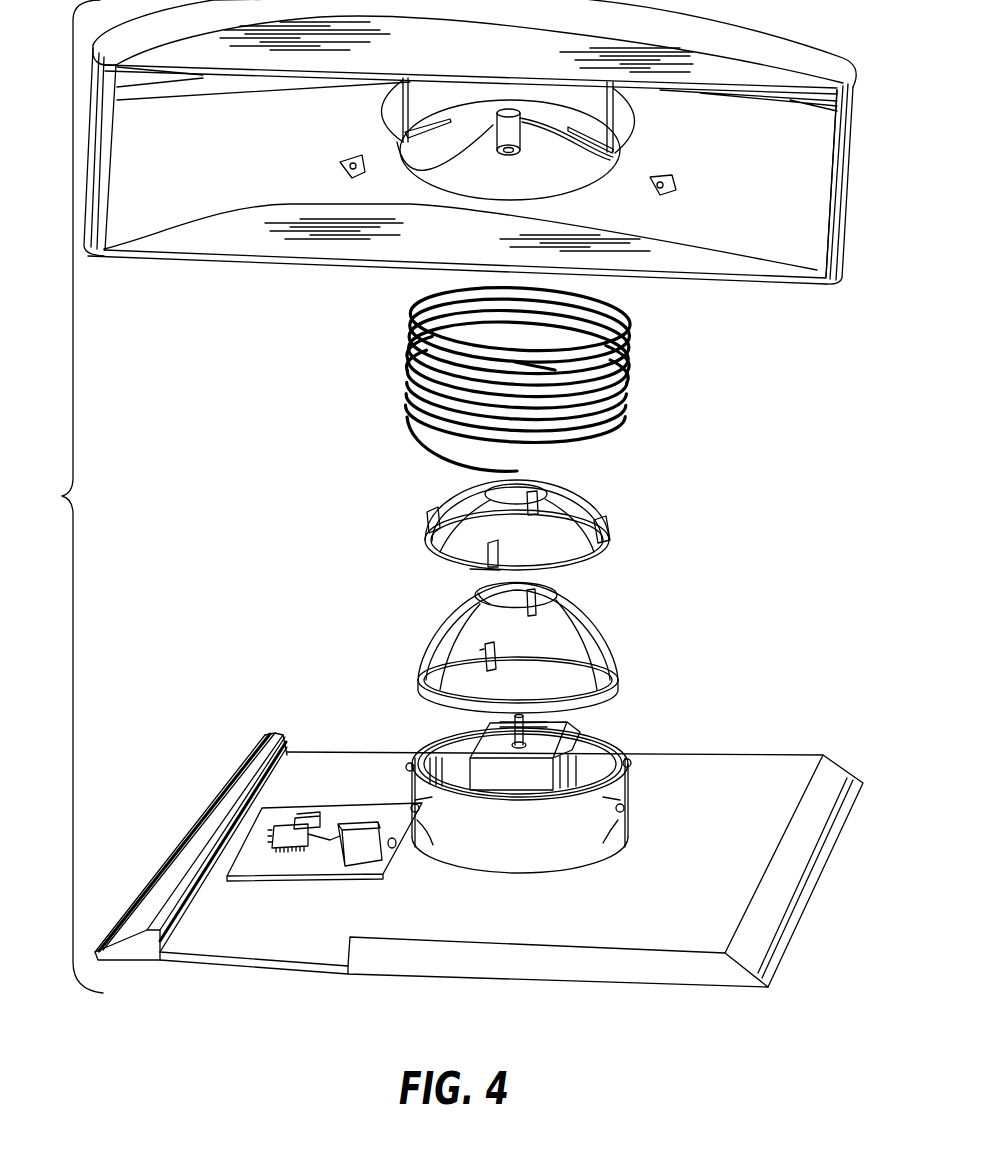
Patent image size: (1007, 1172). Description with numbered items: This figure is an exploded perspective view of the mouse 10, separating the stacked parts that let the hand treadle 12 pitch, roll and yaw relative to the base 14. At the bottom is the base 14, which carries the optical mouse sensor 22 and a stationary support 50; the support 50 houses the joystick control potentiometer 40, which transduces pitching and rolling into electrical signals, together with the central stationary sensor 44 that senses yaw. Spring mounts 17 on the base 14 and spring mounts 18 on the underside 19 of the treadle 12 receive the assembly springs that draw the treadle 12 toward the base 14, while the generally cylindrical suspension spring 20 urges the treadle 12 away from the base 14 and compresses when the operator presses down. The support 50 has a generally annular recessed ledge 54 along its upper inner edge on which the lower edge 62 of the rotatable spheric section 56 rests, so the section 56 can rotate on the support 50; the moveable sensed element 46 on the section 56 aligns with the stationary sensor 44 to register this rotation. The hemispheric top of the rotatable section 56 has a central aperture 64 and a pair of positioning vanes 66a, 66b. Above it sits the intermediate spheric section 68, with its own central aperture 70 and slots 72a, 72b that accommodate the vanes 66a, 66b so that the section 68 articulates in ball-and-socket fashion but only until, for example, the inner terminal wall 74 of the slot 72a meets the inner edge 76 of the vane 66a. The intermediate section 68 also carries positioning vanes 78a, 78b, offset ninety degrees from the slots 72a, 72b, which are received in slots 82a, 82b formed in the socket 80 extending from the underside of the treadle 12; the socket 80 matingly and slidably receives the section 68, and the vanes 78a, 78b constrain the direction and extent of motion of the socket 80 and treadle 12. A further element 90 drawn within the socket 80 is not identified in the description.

The mouse 10 is at (62, 496).
The hand treadle 12 is at (748, 28).
The base 14 is at (479, 852).
The spring mounts 17 is at (608, 820).
The spring mounts 18 is at (340, 170).
The underside 19 is at (778, 225).
The suspension spring 20 is at (410, 405).
The optical mouse sensor 22 is at (293, 863).
The joystick control potentiometer 40 is at (523, 770).
The stationary sensor 44 is at (423, 742).
The moveable sensed element 46 is at (430, 693).
The stationary support 50 is at (519, 803).
The recessed ledge 54 is at (603, 747).
The rotatable spheric section 56 is at (523, 642).
The lower edge 62 is at (613, 688).
The central aperture 64 is at (543, 593).
The positioning vane 66a is at (487, 650).
The positioning vane 66b is at (483, 594).
The intermediate spheric section 68 is at (506, 511).
The central aperture 70 is at (520, 490).
The slot 72a is at (487, 566).
The slot 72b is at (487, 492).
The inner terminal wall 74 is at (500, 545).
The inner edge 76 is at (490, 645).
The positioning vane 78a is at (427, 520).
The positioning vane 78b is at (610, 537).
The socket 80 is at (567, 180).
The slot 82a is at (403, 140).
The slot 82b is at (615, 150).
The post 90 is at (497, 120).